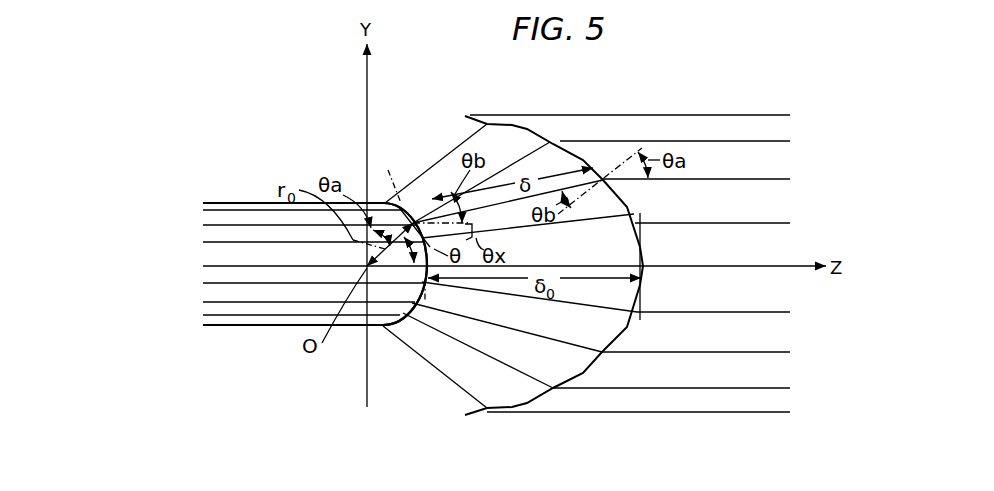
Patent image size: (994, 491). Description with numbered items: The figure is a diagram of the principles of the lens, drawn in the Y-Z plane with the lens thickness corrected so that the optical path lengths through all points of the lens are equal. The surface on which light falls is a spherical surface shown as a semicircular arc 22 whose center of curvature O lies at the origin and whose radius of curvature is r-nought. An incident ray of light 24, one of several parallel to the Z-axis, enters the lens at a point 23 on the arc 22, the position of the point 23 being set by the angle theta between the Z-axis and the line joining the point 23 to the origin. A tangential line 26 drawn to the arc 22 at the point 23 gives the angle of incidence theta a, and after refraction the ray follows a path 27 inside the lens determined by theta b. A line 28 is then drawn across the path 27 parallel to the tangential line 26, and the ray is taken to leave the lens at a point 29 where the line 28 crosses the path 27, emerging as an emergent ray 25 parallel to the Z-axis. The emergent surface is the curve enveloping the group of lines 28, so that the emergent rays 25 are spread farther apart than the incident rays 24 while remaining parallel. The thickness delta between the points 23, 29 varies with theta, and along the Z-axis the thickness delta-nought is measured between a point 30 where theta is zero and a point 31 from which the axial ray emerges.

The semicircular arc 22 is at (413, 312).
The point on the arc 23 is at (416, 217).
The incident ray of light 24 is at (210, 226).
The emergent ray 25 is at (786, 180).
The tangential line 26 is at (388, 175).
The path 27 is at (517, 201).
The line parallel to the tangential line 28 is at (627, 208).
The point of emergence 29 is at (605, 187).
The point where theta equals zero 30 is at (425, 272).
The point of emergence on the Z-axis 31 is at (640, 262).